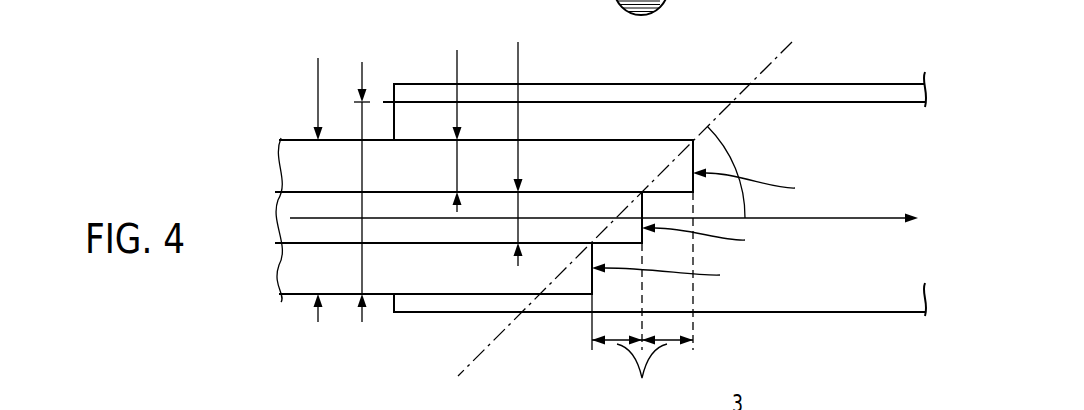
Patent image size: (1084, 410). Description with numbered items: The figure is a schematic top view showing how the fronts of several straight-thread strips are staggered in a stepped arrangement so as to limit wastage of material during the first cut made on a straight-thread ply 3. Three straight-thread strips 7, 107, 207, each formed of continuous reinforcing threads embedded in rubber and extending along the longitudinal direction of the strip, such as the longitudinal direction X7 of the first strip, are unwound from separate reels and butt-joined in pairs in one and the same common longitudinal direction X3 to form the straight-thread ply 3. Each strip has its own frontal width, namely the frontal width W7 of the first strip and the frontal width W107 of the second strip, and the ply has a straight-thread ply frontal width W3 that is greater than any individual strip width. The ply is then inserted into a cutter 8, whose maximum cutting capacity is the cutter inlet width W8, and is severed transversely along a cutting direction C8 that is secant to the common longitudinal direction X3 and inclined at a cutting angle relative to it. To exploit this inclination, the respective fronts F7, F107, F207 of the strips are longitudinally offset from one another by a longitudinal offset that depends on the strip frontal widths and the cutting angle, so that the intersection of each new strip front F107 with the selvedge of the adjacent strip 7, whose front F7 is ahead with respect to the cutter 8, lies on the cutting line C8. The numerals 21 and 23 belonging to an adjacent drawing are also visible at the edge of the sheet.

The straight-thread ply 3 is at (294, 128).
The straight-thread strip 7 is at (287, 168).
The cutter 8 is at (489, 74).
The straight-thread strip 107 is at (292, 208).
The straight-thread strip 207 is at (292, 271).
The element 21 is at (830, 409).
The element 23 is at (420, 406).
The straight-thread ply frontal width W3 is at (319, 176).
The cutter inlet width W8 is at (361, 178).
The frontal width W7 is at (459, 119).
The frontal width W107 is at (522, 141).
The cutting direction C8 is at (778, 53).
The front of straight-thread strip F7 is at (758, 186).
The front of straight-thread strip F107 is at (716, 238).
The front of straight-thread strip F207 is at (678, 274).
The common longitudinal direction X3 is at (881, 215).
The longitudinal direction X7 is at (280, 406).